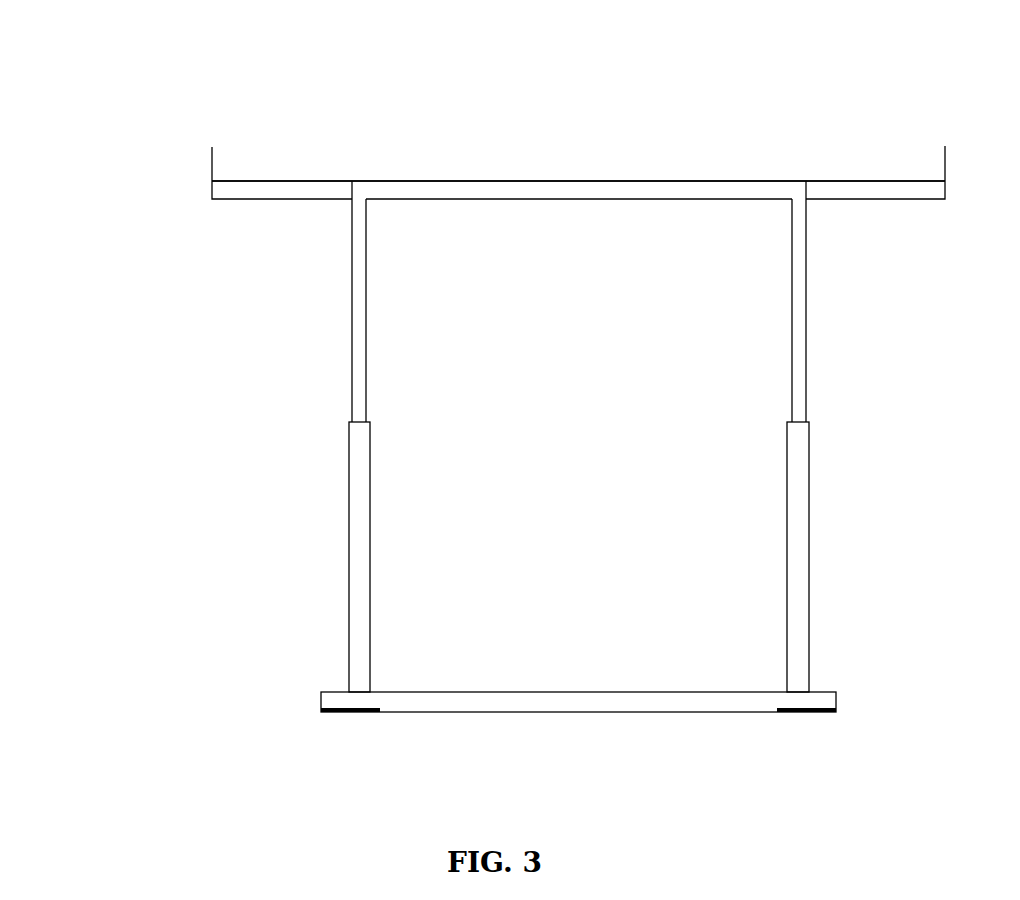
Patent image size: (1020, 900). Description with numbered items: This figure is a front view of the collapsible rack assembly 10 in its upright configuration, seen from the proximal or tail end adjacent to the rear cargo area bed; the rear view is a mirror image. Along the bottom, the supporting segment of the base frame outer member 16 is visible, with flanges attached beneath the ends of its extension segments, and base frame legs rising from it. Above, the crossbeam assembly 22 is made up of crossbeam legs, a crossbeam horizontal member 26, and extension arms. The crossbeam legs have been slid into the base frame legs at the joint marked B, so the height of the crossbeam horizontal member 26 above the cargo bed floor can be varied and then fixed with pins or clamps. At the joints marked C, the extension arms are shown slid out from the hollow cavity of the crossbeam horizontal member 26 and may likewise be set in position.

The collapsible rack assembly 10 is at (96, 82).
The base frame outer member 16 is at (574, 713).
The crossbeam assembly 22 is at (653, 114).
The crossbeam horizontal member 26 is at (587, 178).